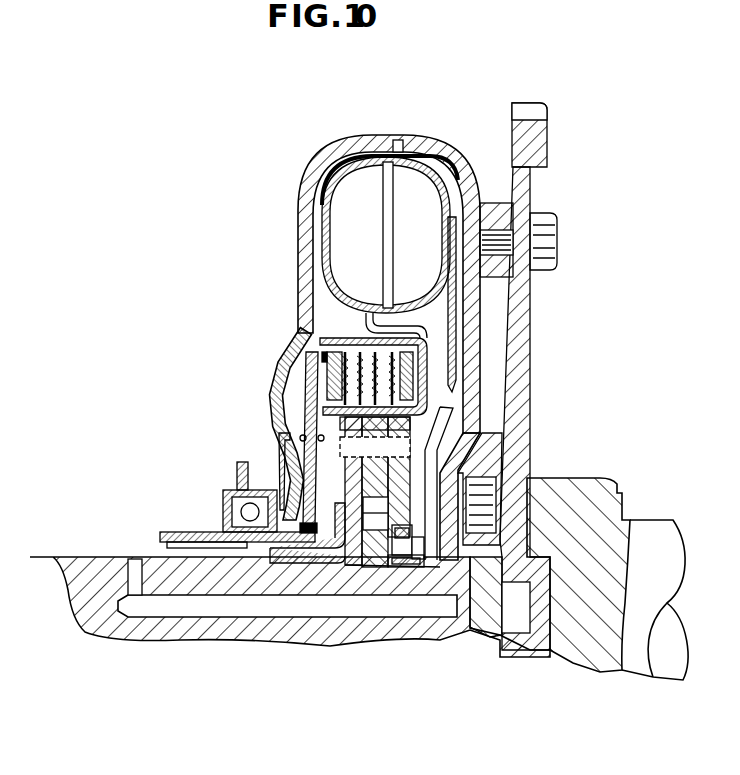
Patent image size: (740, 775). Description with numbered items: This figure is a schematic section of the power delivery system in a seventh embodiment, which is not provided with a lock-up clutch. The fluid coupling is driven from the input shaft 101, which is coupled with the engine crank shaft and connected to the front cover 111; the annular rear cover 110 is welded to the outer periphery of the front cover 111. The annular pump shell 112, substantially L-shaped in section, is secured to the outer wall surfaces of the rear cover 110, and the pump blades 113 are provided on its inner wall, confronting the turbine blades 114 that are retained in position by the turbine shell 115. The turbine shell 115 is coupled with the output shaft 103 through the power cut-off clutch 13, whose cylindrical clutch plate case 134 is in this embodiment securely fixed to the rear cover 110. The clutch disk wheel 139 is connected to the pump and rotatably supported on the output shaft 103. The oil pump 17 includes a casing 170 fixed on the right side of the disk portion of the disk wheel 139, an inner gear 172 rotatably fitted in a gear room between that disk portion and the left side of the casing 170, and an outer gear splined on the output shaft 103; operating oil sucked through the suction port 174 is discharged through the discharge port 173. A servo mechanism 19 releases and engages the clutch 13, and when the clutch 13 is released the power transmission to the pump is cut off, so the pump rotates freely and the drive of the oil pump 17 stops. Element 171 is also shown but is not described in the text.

The power cut-off clutch 13 is at (298, 364).
The oil pump 17 is at (390, 508).
The servo mechanism 19 is at (213, 504).
The input shaft 101 is at (578, 490).
The output shaft 103 is at (230, 642).
The rear cover 110 is at (298, 224).
The front cover 111 is at (470, 313).
The pump shell 112 is at (327, 187).
The pump blades 113 is at (369, 247).
The turbine blades 114 is at (434, 247).
The turbine shell 115 is at (430, 160).
The clutch plate case 134 is at (340, 337).
The clutch disk wheel 139 is at (456, 392).
The casing 170 is at (434, 440).
The seal 171 is at (368, 580).
The inner gear 172 is at (405, 455).
The discharge port 173 is at (332, 540).
The suction port 174 is at (330, 537).